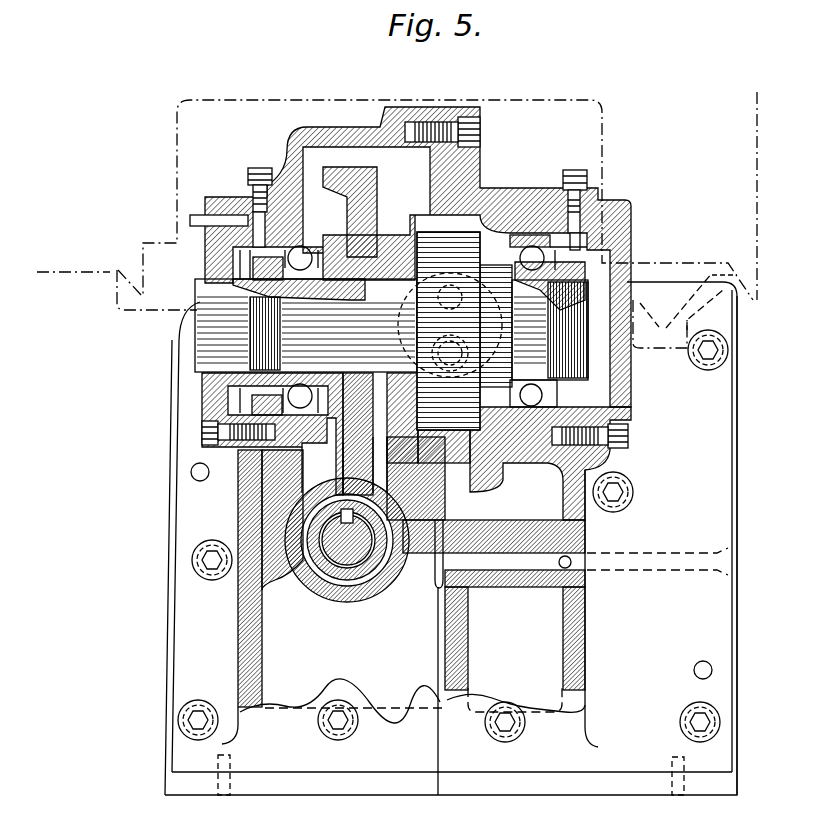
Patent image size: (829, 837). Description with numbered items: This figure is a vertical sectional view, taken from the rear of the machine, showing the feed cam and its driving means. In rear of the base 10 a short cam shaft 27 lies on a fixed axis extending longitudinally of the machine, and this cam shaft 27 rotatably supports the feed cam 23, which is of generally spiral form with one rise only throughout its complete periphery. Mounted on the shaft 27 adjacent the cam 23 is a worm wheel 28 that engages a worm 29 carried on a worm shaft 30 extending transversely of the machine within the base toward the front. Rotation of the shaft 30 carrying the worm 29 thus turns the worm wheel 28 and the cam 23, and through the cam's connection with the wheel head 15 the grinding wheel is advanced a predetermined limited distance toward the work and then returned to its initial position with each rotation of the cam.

The base 10 is at (190, 512).
The wheel head or carriage 15 is at (205, 163).
The feed cam 23 is at (455, 245).
The cam shaft 27 is at (200, 312).
The worm wheel 28 is at (344, 165).
The worm 29 is at (330, 573).
The worm shaft 30 is at (370, 565).